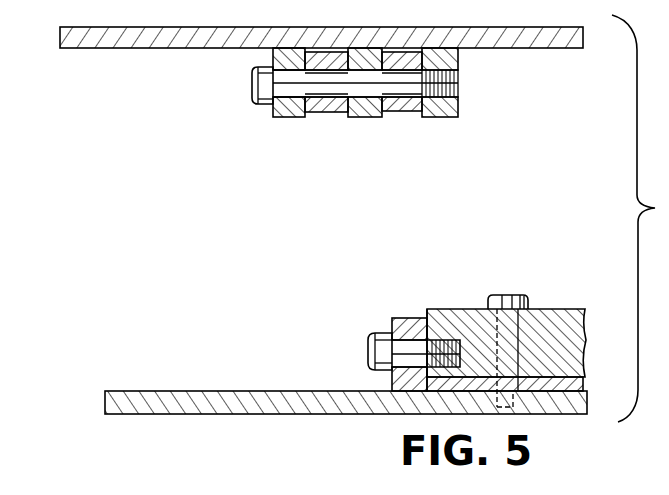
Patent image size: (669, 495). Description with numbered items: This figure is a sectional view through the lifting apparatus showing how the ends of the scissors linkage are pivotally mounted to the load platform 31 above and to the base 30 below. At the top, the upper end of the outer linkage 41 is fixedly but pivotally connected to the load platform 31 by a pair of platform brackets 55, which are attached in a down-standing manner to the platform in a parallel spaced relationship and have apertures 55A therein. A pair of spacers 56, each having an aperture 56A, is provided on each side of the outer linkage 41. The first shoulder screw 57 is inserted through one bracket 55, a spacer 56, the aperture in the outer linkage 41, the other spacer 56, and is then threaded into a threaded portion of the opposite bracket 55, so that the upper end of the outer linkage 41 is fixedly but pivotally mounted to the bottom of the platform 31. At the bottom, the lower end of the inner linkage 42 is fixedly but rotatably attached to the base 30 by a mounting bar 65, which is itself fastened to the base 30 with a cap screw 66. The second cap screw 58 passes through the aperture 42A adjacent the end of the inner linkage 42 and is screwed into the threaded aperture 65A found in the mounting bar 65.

The base 30 is at (156, 402).
The load platform 31 is at (108, 48).
The outer linkage 41 is at (362, 117).
The inner linkage 42 is at (405, 320).
The aperture 42A is at (372, 335).
The platform bracket 55 is at (283, 118).
The aperture 55A is at (252, 82).
The spacer 56 is at (318, 117).
The aperture 56A is at (410, 70).
The first shoulder screw 57 is at (252, 90).
The second cap screw 58 is at (370, 353).
The mounting bar 65 is at (565, 320).
The threaded aperture 65A is at (432, 311).
The cap screw 66 is at (505, 296).